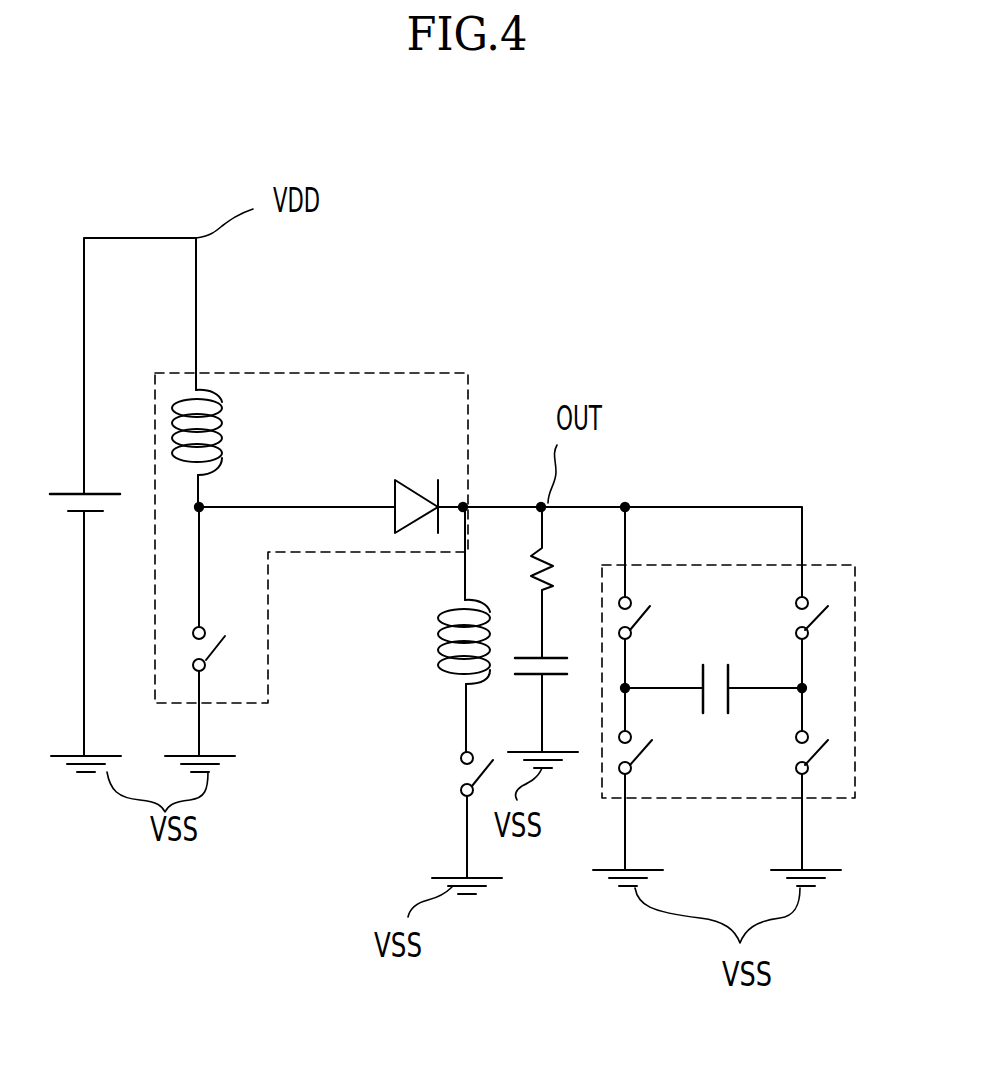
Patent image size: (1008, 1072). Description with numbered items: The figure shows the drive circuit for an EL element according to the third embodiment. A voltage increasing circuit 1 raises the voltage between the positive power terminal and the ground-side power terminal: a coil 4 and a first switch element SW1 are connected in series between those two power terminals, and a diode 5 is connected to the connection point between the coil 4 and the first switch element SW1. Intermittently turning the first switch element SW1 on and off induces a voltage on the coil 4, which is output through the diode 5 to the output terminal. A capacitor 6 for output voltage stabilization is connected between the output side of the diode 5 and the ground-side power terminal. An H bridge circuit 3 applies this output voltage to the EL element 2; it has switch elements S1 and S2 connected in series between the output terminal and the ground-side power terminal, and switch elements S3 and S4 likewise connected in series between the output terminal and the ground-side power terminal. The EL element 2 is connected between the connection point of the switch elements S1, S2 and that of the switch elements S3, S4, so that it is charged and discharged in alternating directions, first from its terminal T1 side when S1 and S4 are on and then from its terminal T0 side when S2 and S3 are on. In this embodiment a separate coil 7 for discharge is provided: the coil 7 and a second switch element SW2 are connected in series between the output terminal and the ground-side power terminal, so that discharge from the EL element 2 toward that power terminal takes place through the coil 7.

The voltage increasing circuit 1 is at (345, 372).
The EL element 2 is at (727, 667).
The H bridge circuit 3 is at (765, 800).
The coil 4 is at (222, 457).
The diode 5 is at (402, 480).
The capacitor 6 is at (533, 675).
The coil for discharge 7 is at (440, 658).
The first switch element SW1 is at (217, 658).
The second switch element SW2 is at (461, 765).
The switch element S1 is at (619, 633).
The switch element S2 is at (620, 790).
The switch element S3 is at (805, 595).
The switch element S4 is at (827, 728).
The terminal T1 is at (650, 690).
The terminal T0 is at (747, 690).